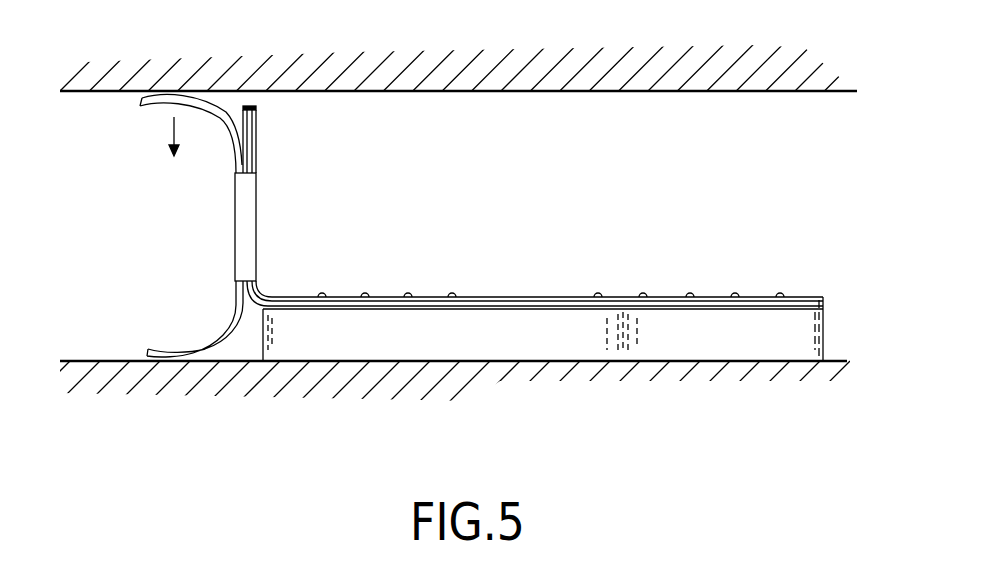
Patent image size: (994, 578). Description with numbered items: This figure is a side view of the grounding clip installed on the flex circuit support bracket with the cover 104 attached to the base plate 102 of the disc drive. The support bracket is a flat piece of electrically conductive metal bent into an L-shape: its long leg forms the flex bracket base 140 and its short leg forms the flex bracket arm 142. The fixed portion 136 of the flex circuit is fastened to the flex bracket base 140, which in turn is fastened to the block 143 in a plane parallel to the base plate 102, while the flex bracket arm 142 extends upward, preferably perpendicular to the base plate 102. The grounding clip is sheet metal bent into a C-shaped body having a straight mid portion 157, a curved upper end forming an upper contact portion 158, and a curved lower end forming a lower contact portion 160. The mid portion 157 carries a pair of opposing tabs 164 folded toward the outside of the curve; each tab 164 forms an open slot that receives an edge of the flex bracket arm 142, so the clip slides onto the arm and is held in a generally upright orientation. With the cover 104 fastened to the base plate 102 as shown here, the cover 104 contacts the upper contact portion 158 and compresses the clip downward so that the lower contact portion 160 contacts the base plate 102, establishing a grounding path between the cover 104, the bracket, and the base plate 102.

The base plate 102 is at (698, 375).
The cover 104 is at (533, 74).
The fixed portion 136 is at (533, 296).
The flex bracket base 140 is at (470, 297).
The flex bracket arm 142 is at (246, 106).
The block 143 is at (806, 336).
The mid portion 157 is at (237, 163).
The upper contact portion 158 is at (166, 90).
The lower contact portion 160 is at (177, 362).
The tabs 164 is at (256, 203).